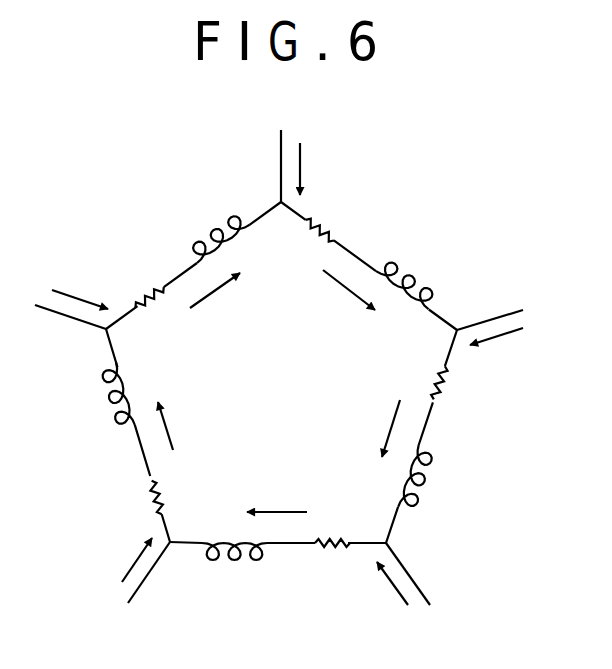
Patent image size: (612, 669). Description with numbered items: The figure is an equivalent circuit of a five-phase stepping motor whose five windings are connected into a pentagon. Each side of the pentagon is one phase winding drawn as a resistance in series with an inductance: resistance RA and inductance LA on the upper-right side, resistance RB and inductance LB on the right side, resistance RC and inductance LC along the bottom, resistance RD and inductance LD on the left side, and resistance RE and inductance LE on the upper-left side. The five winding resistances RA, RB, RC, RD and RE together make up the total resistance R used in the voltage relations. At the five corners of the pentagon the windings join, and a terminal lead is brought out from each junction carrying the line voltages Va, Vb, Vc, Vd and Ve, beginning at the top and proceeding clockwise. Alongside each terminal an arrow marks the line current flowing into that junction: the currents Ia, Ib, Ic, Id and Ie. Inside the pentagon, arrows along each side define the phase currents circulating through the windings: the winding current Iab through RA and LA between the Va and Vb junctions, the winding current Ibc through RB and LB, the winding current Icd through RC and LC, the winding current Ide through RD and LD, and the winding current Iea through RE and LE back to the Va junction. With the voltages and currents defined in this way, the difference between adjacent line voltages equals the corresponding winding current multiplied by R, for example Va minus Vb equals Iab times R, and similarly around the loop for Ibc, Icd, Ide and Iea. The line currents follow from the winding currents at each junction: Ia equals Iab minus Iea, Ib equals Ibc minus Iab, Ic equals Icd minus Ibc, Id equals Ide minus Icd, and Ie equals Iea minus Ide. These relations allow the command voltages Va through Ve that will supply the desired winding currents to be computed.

The phase A winding resistance RA is at (336, 223).
The phase A winding inductance LA is at (415, 279).
The phase B winding resistance RB is at (458, 391).
The phase B winding inductance LB is at (430, 477).
The phase C winding resistance RC is at (331, 565).
The phase C winding inductance LC is at (234, 568).
The phase D winding resistance RD is at (128, 495).
The phase D winding inductance LD is at (95, 394).
The phase E winding resistance RE is at (139, 285).
The phase E winding inductance LE is at (211, 229).
The line voltage Va is at (261, 163).
The line voltage Vb is at (490, 304).
The line voltage Vc is at (426, 574).
The line voltage Vd is at (152, 588).
The line voltage Ve is at (70, 330).
The line current Ia is at (318, 169).
The line current Ib is at (496, 352).
The line current Ic is at (386, 593).
The line current Id is at (123, 557).
The line current Ie is at (75, 283).
The winding current Iea is at (220, 306).
The winding current Iab is at (346, 304).
The winding current Ibc is at (366, 428).
The winding current Icd is at (277, 493).
The winding current Ide is at (190, 426).